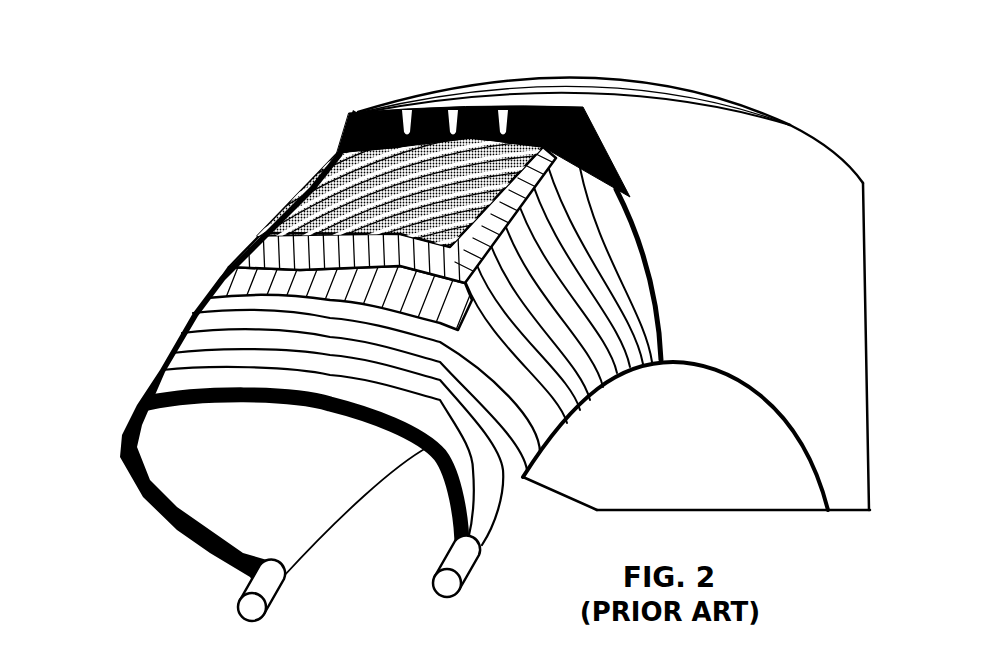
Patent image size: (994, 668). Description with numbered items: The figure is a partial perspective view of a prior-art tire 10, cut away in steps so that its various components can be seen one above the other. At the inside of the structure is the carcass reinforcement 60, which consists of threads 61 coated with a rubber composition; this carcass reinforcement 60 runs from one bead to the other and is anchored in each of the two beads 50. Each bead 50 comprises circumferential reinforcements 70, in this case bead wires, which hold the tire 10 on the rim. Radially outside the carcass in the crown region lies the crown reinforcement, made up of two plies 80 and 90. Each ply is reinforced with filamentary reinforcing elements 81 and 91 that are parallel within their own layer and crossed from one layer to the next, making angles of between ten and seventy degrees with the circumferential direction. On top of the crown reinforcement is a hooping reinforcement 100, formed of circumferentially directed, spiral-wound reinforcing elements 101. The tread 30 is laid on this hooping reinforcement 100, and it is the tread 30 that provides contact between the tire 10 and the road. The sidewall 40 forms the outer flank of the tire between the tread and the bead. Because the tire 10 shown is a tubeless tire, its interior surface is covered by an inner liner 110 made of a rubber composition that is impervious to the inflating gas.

The tire 10 is at (787, 83).
The tread 30 is at (383, 105).
The sidewall 40 is at (695, 257).
The bead 50 is at (417, 552).
The carcass reinforcement 60 is at (351, 345).
The threads 61 is at (210, 348).
The circumferential reinforcement 70 is at (433, 584).
The ply 80 is at (280, 277).
The filamentary reinforcing elements 81 is at (230, 273).
The ply 90 is at (322, 206).
The filamentary reinforcing elements 91 is at (283, 213).
The hooping reinforcement 100 is at (338, 185).
The reinforcing elements 101 is at (337, 155).
The inner liner 110 is at (230, 481).